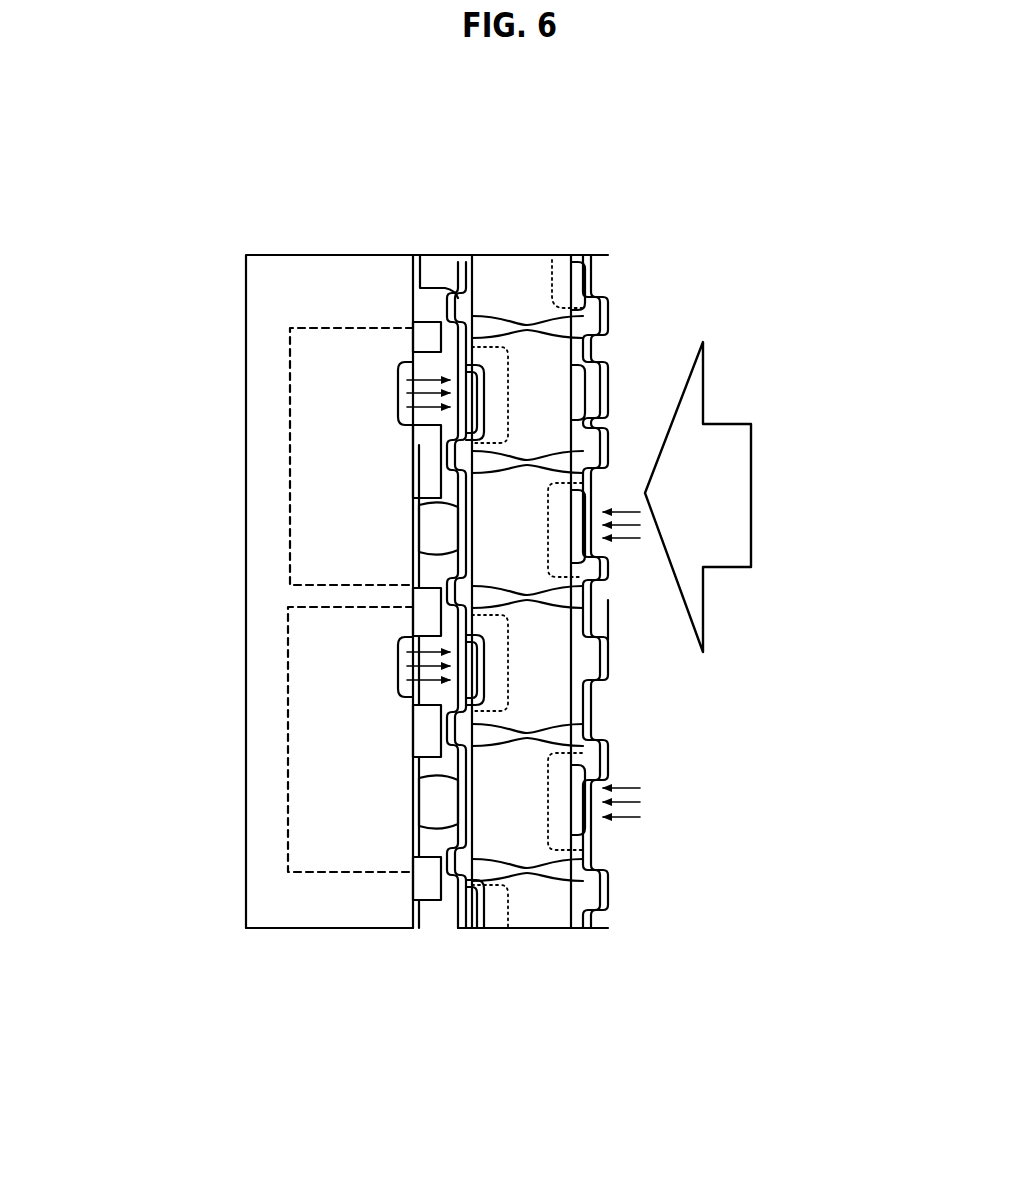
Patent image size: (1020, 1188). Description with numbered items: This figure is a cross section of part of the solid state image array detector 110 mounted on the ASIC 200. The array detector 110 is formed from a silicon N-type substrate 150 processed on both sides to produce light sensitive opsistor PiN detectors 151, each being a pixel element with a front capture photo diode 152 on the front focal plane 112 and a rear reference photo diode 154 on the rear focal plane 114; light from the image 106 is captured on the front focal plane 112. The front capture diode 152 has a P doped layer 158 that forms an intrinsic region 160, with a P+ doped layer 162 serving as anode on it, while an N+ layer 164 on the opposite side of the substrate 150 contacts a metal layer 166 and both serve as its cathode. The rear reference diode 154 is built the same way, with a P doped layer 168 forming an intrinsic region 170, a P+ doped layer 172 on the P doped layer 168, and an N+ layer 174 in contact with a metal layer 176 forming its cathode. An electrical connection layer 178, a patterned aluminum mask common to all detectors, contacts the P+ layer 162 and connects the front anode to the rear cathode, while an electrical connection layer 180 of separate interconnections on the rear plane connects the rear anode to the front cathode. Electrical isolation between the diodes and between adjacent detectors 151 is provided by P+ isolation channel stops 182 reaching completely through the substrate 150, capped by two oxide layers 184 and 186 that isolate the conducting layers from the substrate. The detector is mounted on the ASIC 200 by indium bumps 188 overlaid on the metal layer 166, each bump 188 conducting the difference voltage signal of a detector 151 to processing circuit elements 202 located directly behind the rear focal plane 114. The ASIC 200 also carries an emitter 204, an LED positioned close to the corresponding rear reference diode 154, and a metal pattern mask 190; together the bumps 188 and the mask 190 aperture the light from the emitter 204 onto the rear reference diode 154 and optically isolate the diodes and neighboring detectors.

The image 106 is at (735, 542).
The solid state image array detector 110 is at (601, 212).
The front focal plane 112 is at (548, 940).
The rear focal plane 114 is at (340, 935).
The silicon N-type substrate 150 is at (515, 275).
The opsistor PiN detector 151 is at (630, 447).
The front capture photo diode 152 is at (614, 511).
The rear reference photo diode 154 is at (445, 410).
The P doped layer 158 is at (608, 598).
The intrinsic region 160 is at (613, 613).
The P+ doped layer 162 is at (598, 570).
The N+ layer 164 is at (412, 580).
The metal layer 166 is at (453, 505).
The P doped layer 168 is at (483, 392).
The intrinsic region 170 is at (500, 368).
The P+ doped layer 172 is at (470, 430).
The N+ layer 174 is at (583, 380).
The metal layer 176 is at (600, 387).
The electrical connection layer 178 is at (647, 493).
The electrical connection layer 180 is at (455, 435).
The isolation channel stop 182 is at (500, 328).
The oxide layer 184 is at (592, 315).
The oxide layer 186 is at (450, 318).
The bump 188 is at (445, 281).
The metal pattern mask 190 is at (450, 332).
The ASIC 200 is at (322, 262).
The processing circuit elements 202 is at (340, 452).
The emitter 204 is at (470, 409).